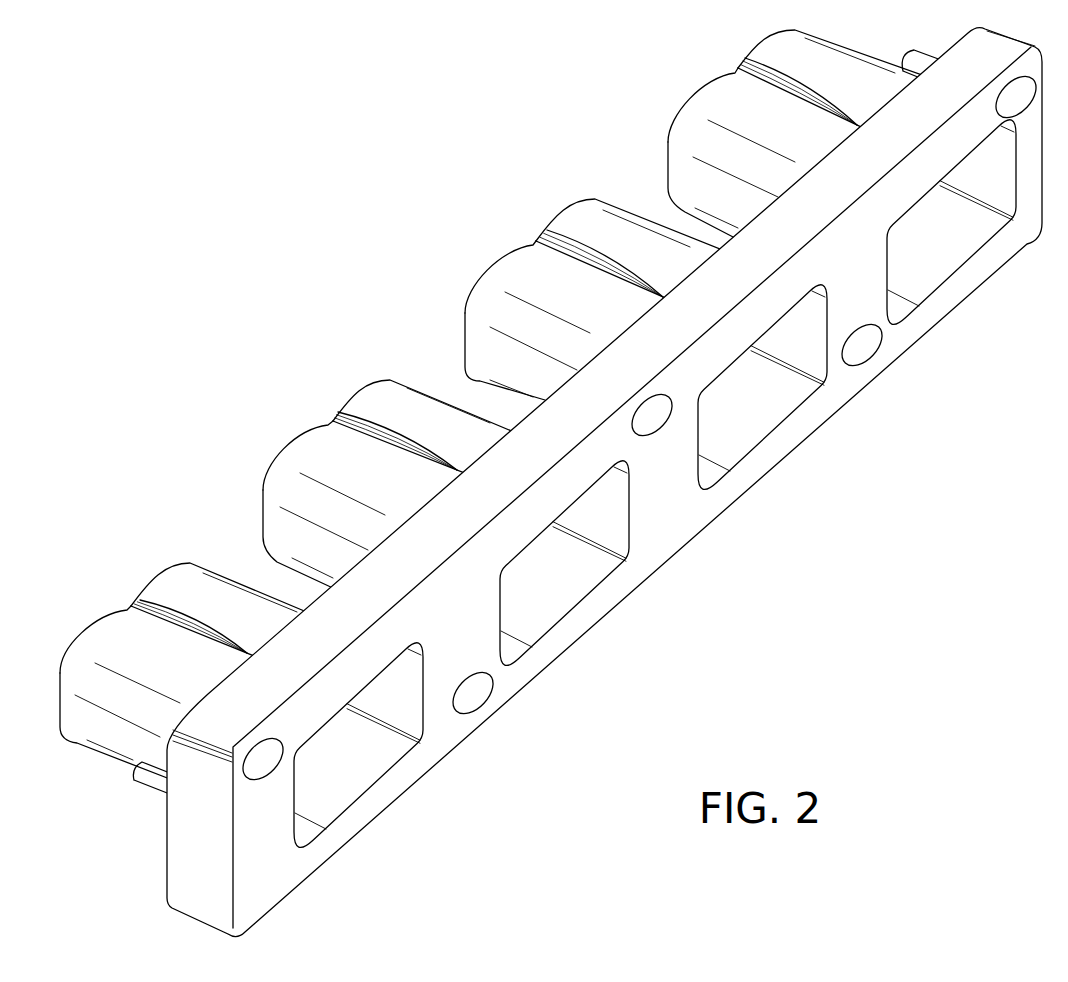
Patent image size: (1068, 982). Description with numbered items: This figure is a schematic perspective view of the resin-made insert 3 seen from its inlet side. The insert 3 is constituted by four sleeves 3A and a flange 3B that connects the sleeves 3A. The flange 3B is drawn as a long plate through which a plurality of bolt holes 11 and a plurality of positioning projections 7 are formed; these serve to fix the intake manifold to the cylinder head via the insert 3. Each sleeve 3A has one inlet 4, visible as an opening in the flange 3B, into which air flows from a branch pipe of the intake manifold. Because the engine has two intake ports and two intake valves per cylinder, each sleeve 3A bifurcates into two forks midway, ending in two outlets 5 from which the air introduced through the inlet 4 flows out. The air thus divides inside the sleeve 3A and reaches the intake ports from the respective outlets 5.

The insert 3 is at (836, 371).
The sleeve 3A is at (582, 233).
The flange 3B is at (703, 497).
The inlet 4 is at (548, 602).
The outlet 5 is at (76, 648).
The positioning projection 7 is at (150, 776).
The bolt hole 11 is at (473, 693).